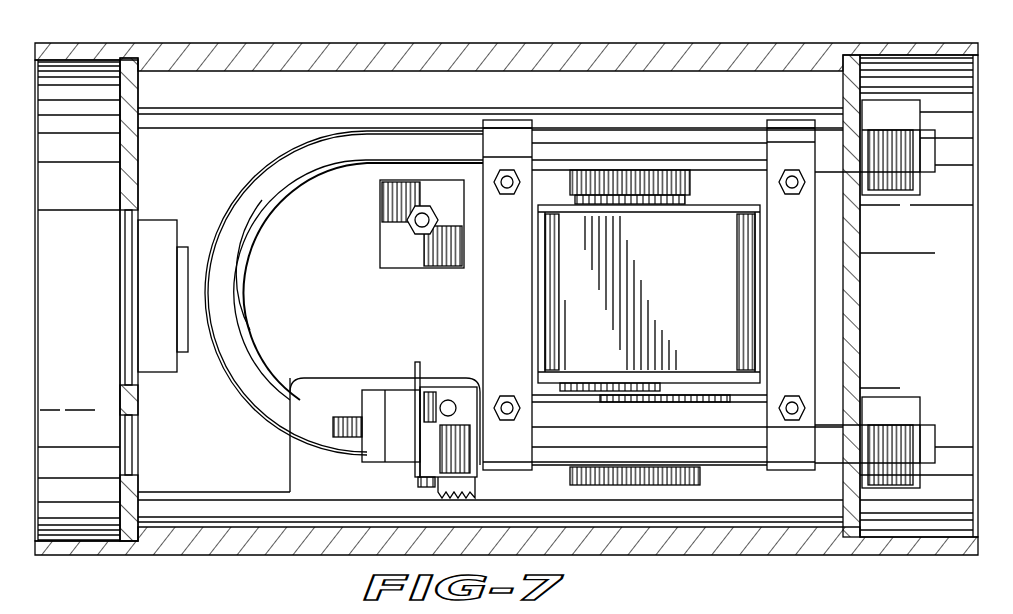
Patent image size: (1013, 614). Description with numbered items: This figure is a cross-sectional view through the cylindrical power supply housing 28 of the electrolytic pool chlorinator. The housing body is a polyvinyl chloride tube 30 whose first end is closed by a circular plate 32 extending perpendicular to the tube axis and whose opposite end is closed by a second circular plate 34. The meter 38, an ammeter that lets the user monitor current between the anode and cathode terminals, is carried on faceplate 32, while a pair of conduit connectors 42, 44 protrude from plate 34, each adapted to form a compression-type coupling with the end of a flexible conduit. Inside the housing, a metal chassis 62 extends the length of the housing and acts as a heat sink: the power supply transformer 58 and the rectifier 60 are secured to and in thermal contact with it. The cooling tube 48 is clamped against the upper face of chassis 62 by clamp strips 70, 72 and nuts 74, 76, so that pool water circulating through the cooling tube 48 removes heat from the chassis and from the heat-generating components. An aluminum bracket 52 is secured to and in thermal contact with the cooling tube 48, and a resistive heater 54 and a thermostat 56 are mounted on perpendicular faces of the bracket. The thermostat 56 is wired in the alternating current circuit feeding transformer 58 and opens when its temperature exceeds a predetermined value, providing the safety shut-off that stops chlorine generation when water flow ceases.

The power supply housing 28 is at (207, 565).
The polyvinyl chloride tube 30 is at (466, 46).
The circular plate 32 is at (120, 180).
The circular plate 34 is at (858, 287).
The meter 38 is at (126, 312).
The conduit connector 42 is at (900, 398).
The conduit connector 44 is at (890, 198).
The cooling tube 48 is at (268, 378).
The aluminum bracket 52 is at (438, 388).
The resistive heater 54 is at (466, 494).
The thermostat 56 is at (392, 395).
The power supply transformer 58 is at (649, 294).
The rectifier 60 is at (388, 229).
The metal chassis 62 is at (385, 375).
The clamp strip 70 is at (513, 125).
The clamp strip 72 is at (786, 125).
The nut 74 is at (510, 196).
The nut 76 is at (800, 196).